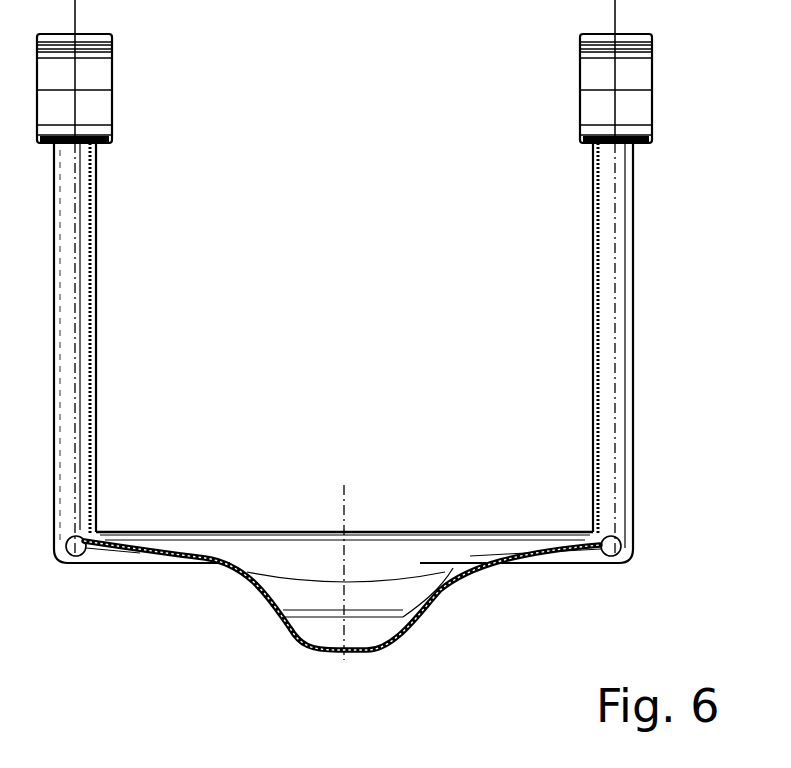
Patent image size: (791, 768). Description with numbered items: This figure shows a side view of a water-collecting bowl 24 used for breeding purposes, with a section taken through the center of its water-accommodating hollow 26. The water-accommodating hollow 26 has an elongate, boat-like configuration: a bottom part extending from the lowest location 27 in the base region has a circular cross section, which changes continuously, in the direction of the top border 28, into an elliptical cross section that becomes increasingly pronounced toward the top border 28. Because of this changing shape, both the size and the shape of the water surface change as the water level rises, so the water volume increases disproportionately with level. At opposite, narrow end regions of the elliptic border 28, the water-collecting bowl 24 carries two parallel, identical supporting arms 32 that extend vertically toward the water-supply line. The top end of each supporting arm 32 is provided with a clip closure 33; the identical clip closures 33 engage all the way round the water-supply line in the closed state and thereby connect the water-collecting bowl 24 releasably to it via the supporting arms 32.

The water-collecting bowl 24 is at (382, 353).
The water-accommodating hollow 26 is at (293, 555).
The lowest location 27 is at (360, 653).
The top border 28 is at (193, 531).
The supporting arms 32 is at (72, 310).
The clip closure 33 is at (100, 107).